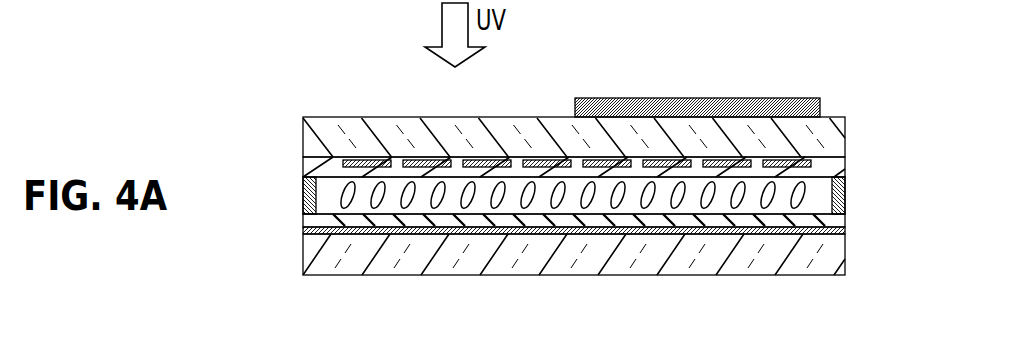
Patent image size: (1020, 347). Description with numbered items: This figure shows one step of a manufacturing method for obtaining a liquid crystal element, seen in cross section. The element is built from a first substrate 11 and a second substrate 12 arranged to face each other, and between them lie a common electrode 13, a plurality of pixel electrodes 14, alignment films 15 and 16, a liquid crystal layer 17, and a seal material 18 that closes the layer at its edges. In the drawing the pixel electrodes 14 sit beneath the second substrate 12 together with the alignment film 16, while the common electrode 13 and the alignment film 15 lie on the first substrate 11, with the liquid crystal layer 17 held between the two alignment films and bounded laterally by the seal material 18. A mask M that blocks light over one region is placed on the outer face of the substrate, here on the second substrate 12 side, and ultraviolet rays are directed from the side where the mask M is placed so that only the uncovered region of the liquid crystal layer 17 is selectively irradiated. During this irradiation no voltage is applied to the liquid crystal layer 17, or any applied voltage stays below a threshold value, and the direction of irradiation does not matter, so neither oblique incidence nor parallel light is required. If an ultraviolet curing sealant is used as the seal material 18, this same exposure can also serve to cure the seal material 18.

The first substrate 11 is at (847, 263).
The second substrate 12 is at (847, 127).
The common electrode 13 is at (708, 235).
The pixel electrodes 14 is at (416, 160).
The alignment film 15 is at (847, 227).
The alignment film 16 is at (847, 164).
The liquid crystal layer 17 is at (576, 203).
The seal material 18 is at (847, 193).
The mask M is at (742, 97).